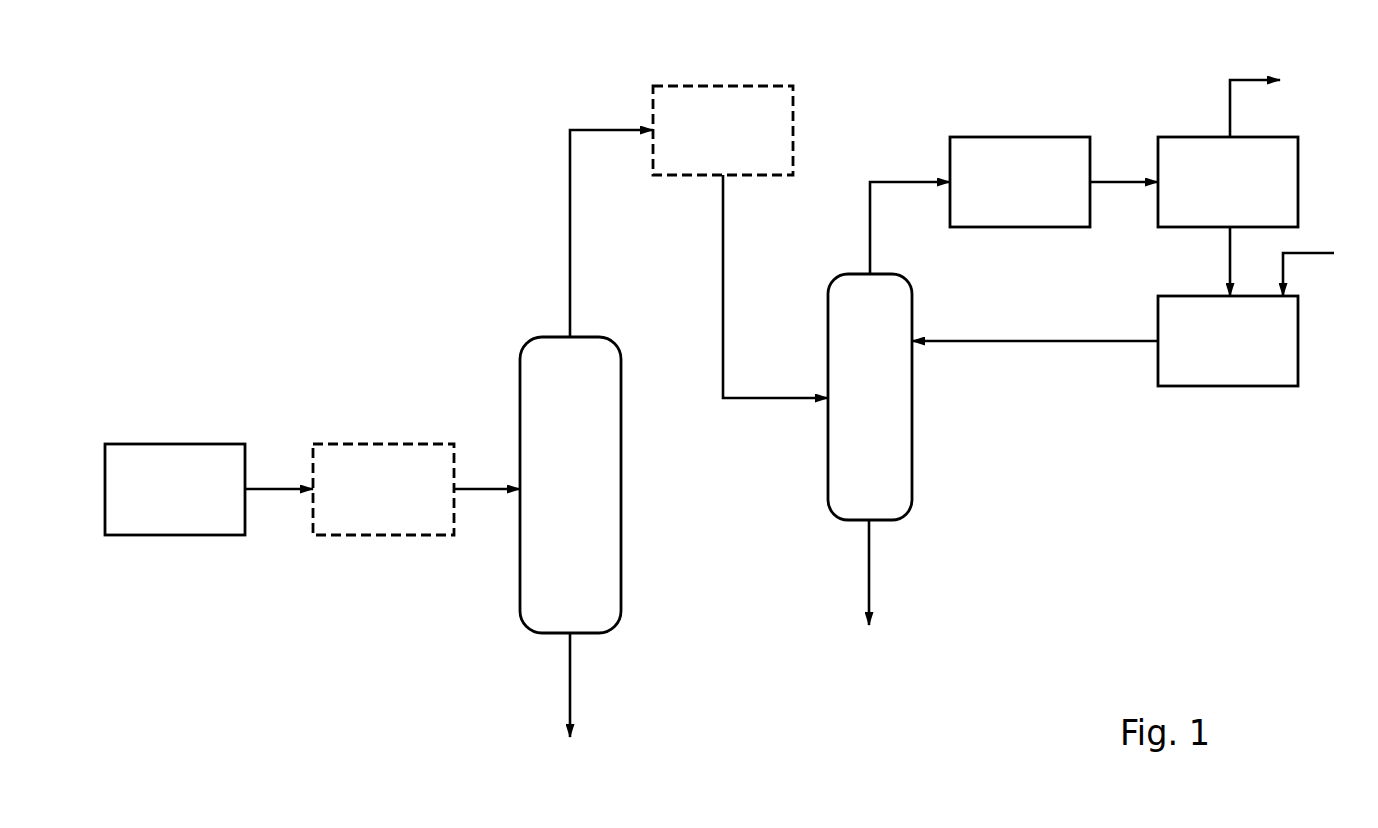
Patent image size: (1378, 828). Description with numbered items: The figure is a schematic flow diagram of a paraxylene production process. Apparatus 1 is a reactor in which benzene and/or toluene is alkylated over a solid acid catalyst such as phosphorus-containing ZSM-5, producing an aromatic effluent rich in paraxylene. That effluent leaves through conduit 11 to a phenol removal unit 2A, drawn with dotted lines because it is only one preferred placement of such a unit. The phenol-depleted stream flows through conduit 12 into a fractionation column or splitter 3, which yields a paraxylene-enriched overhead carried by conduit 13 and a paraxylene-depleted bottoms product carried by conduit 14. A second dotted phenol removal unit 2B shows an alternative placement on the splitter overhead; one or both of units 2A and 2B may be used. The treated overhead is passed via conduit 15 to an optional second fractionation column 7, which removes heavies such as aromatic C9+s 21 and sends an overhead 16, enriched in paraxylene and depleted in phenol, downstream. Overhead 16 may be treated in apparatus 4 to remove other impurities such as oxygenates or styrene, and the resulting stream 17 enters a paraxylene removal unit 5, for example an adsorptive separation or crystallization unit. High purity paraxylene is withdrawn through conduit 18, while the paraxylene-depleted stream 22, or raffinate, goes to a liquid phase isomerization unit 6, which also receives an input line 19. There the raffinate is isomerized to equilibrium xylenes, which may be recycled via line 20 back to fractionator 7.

The apparatus 1 is at (165, 444).
The phenol removal unit 2A is at (375, 444).
The phenol removal unit 2B is at (715, 86).
The fractionation column or splitter 3 is at (520, 388).
The apparatus 4 is at (985, 137).
The paraxylene removal unit 5 is at (1175, 137).
The liquid phase isomerization unit 6 is at (1220, 387).
The second fractionation column 7 is at (912, 456).
The conduit 11 is at (280, 490).
The conduit 12 is at (490, 490).
The conduit 13 is at (570, 218).
The conduit 14 is at (570, 678).
The conduit 15 is at (768, 398).
The overhead 16 is at (870, 240).
The stream 17 is at (1123, 183).
The conduit 18 is at (1248, 80).
The additive inlet line 19 is at (1307, 253).
The line 20 is at (1035, 330).
The aromatic C9+s 21 is at (869, 567).
The paraxylene-depleted stream 22 is at (1228, 253).